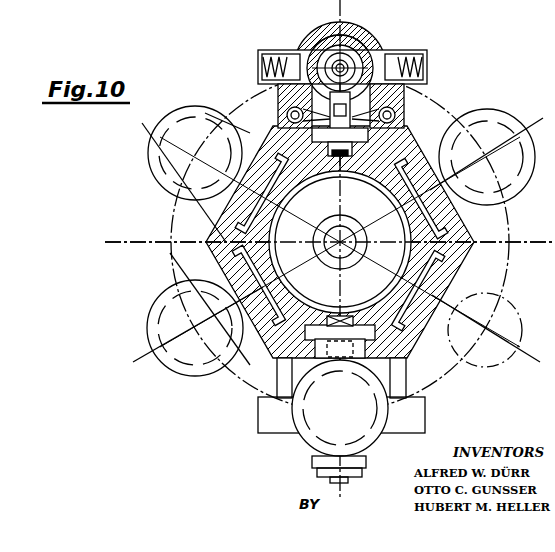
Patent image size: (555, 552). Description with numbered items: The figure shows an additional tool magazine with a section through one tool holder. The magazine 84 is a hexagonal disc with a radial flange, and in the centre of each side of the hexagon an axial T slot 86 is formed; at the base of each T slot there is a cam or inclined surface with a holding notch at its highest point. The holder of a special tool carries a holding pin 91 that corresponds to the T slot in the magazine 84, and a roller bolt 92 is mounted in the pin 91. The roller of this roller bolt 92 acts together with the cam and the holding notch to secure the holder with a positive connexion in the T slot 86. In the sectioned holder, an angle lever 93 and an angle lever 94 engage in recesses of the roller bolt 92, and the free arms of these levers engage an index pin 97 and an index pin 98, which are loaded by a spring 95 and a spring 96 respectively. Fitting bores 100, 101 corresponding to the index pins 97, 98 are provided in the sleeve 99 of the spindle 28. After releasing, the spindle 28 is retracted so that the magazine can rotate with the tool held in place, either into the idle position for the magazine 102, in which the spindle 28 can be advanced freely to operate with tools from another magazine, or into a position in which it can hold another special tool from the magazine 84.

The spindle 28 is at (336, 26).
The magazine 84 is at (213, 235).
The T slot 86 is at (430, 290).
The holding pin 91 is at (310, 153).
The roller bolt 92 is at (360, 153).
The angle lever 93 is at (400, 97).
The angle lever 94 is at (262, 94).
The spring 95 is at (424, 66).
The spring 96 is at (262, 64).
The index pin 97 is at (401, 54).
The index pin 98 is at (289, 56).
The sleeve 99 is at (367, 28).
The fitting bore 100 is at (388, 34).
The fitting bore 101 is at (306, 30).
The idle position for the magazine 102 is at (490, 292).